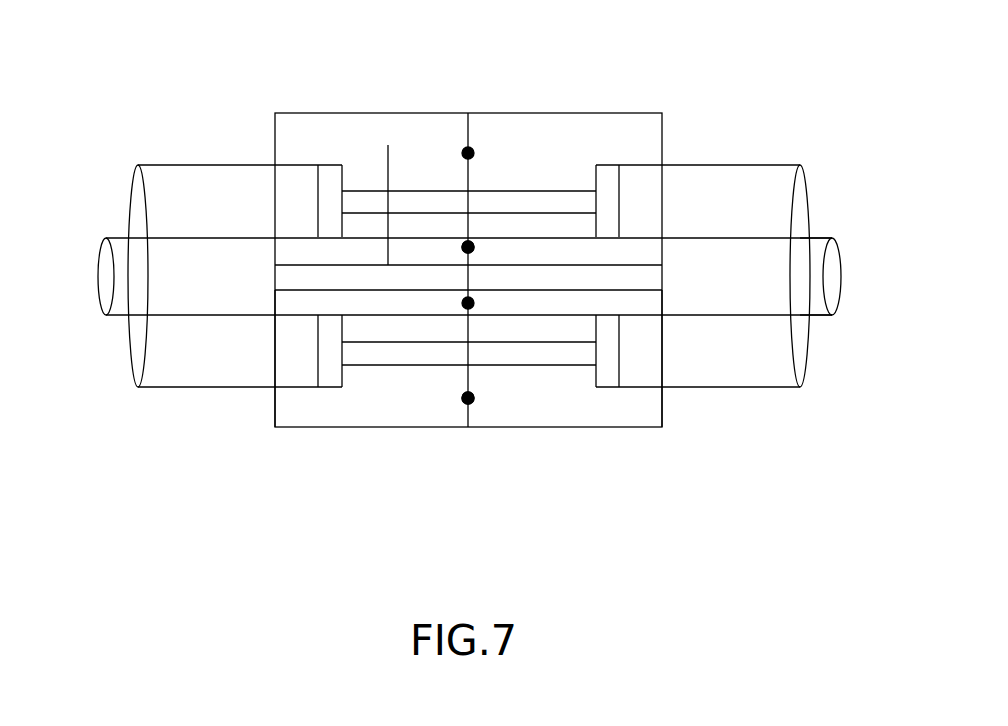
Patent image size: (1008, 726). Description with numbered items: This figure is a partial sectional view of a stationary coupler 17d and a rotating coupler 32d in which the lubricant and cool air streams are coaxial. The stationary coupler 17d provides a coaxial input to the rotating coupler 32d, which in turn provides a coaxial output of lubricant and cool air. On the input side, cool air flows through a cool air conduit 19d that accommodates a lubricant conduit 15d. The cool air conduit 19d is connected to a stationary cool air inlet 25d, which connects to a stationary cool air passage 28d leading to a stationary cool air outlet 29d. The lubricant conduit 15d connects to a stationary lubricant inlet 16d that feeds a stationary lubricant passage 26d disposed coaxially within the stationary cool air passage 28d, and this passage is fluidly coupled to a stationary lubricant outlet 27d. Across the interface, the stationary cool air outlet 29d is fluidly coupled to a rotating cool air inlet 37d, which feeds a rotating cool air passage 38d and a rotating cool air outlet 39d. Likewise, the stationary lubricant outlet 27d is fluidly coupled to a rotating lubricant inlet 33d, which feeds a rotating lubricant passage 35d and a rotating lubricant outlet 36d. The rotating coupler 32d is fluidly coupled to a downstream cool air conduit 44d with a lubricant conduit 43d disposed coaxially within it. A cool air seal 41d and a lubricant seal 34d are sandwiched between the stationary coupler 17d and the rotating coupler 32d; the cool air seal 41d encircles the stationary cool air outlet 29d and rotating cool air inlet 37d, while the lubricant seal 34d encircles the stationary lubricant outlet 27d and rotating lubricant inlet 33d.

The lubricant conduit 15d is at (822, 238).
The stationary lubricant inlet 16d is at (662, 289).
The stationary coupler 17d is at (516, 113).
The cool air conduit 19d is at (697, 165).
The stationary cool air inlet 25d is at (595, 350).
The stationary lubricant passage 26d is at (548, 191).
The stationary lubricant outlet 27d is at (468, 265).
The stationary cool air passage 28d is at (527, 362).
The stationary cool air outlet 29d is at (468, 365).
The rotating coupler 32d is at (388, 113).
The rotating lubricant inlet 33d is at (468, 265).
The lubricant seal 34d is at (468, 303).
The rotating lubricant passage 35d is at (388, 145).
The rotating lubricant outlet 36d is at (275, 165).
The rotating cool air inlet 37d is at (467, 365).
The rotating cool air passage 38d is at (388, 365).
The rotating cool air outlet 39d is at (345, 365).
The cool air seal 41d is at (466, 150).
The lubricant conduit 43d is at (120, 238).
The cool air conduit 44d is at (196, 165).